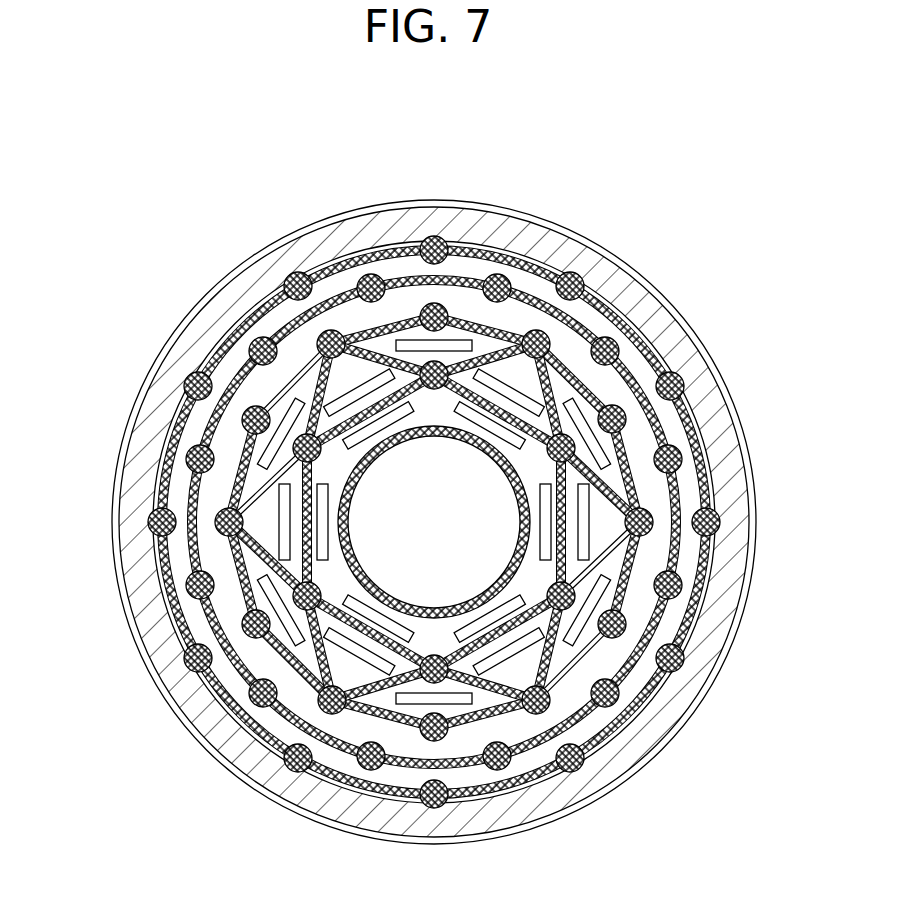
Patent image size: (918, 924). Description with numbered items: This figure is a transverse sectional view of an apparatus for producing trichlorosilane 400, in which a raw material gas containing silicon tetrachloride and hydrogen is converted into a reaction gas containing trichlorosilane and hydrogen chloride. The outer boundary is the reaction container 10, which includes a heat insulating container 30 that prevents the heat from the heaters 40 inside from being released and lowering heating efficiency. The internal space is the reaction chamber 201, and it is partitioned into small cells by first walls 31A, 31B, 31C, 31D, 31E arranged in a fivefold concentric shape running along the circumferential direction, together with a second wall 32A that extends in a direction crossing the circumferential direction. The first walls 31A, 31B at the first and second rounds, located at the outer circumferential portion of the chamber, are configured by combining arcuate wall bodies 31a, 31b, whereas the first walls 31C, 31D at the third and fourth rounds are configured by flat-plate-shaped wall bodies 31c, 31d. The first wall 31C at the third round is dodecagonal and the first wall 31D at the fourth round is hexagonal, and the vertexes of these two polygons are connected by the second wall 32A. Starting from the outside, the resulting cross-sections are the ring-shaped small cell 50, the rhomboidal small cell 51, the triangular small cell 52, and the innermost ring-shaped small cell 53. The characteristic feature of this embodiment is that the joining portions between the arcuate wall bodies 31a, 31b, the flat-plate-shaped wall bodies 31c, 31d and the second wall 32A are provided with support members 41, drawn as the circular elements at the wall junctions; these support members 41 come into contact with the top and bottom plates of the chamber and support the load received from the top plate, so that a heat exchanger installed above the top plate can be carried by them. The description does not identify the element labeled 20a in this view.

The reaction container 10 is at (487, 204).
The apparatus for producing trichlorosilane 400 is at (526, 172).
The stator core 20a is at (222, 330).
The heat insulating container 30 is at (620, 282).
The first wall 31A is at (255, 298).
The first wall 31B is at (113, 503).
The first wall 31C is at (313, 393).
The first wall 31D is at (632, 578).
The first wall 31E is at (303, 612).
The arcuate wall body 31a is at (233, 357).
The arcuate wall body 31b is at (187, 622).
The flat-plate-shaped wall body 31c is at (216, 625).
The flat-plate-shaped wall body 31d is at (470, 393).
The second wall 32A is at (178, 499).
The heater 40 is at (606, 669).
The support member 41 is at (622, 335).
The ring-shaped small cell 50 is at (220, 437).
The rhomboidal small cell 51 is at (270, 330).
The triangular small cell 52 is at (324, 478).
The ring-shaped small cell 53 is at (412, 616).
The reaction chamber 201 is at (645, 690).